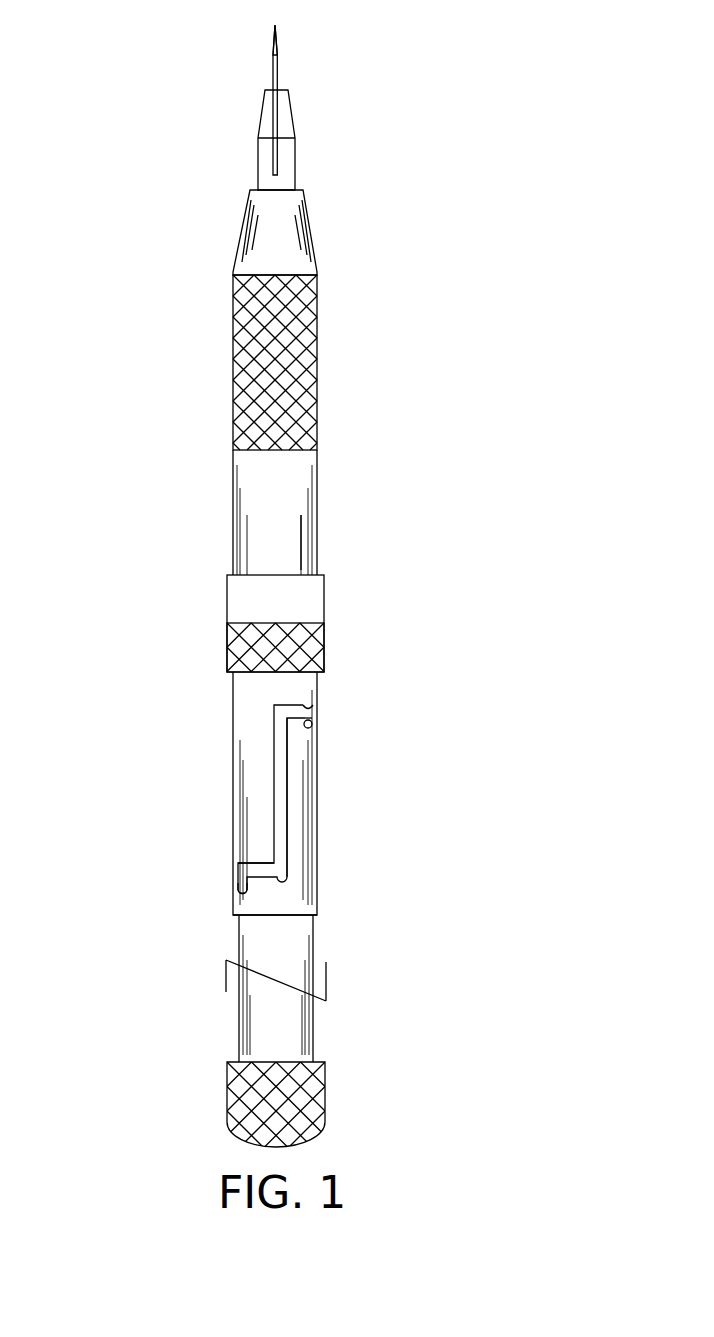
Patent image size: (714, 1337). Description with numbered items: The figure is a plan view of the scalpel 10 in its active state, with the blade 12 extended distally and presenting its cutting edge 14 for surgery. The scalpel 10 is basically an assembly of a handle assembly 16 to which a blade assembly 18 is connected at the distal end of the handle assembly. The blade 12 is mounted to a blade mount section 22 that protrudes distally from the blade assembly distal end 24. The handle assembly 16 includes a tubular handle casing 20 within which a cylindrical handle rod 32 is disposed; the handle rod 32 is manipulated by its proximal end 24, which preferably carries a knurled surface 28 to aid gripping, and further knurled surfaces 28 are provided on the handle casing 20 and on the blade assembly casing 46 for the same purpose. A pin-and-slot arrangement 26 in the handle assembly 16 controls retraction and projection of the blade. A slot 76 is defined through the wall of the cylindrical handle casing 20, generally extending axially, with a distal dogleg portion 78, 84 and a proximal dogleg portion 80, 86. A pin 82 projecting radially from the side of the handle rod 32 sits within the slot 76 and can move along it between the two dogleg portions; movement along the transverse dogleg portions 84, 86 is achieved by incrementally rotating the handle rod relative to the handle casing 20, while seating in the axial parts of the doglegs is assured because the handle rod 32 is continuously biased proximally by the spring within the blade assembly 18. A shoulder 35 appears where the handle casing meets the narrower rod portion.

The scalpel 10 is at (117, 249).
The blade 12 is at (272, 70).
The cutting edge 14 is at (272, 33).
The handle assembly 16 is at (210, 634).
The blade assembly 18 is at (233, 463).
The handle casing 20 is at (232, 698).
The blade mount section 22 is at (258, 150).
The distal end / proximal end 24 is at (300, 190).
The pin-and-slot arrangement 26 is at (293, 770).
The knurled surface 28 is at (317, 370).
The handle rod 32 is at (239, 1010).
The shoulder 35 is at (317, 915).
The blade assembly casing 46 is at (297, 465).
The slot 76 is at (283, 818).
The distal dogleg portion 78 is at (318, 712).
The proximal dogleg portion 80 is at (242, 888).
The pin 82 is at (315, 726).
The transverse dogleg portion 84 is at (310, 705).
The transverse dogleg portion 86 is at (252, 862).